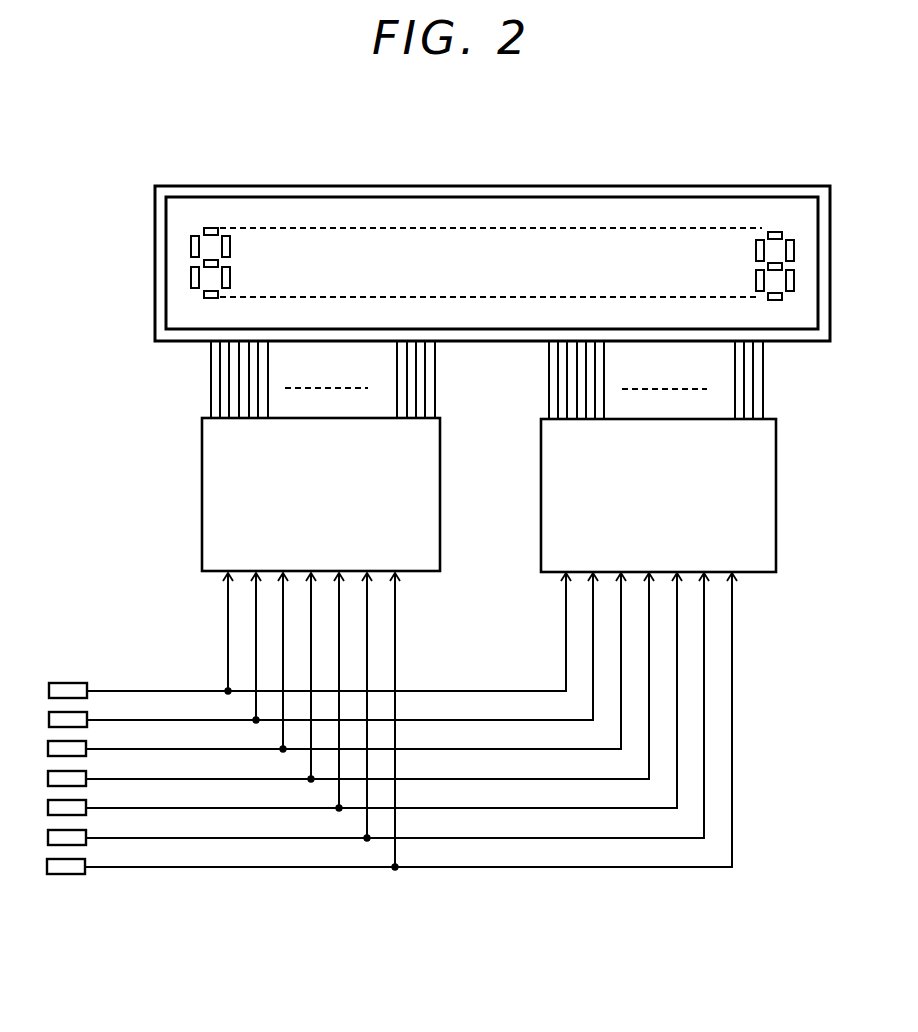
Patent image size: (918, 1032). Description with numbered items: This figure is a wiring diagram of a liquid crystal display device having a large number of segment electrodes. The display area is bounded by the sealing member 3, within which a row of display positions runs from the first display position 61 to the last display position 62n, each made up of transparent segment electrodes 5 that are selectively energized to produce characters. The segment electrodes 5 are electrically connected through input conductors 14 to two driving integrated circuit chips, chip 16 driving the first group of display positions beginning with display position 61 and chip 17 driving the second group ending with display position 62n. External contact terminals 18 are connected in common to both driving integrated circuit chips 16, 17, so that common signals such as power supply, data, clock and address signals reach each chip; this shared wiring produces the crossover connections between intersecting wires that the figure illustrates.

The sealing member 3 is at (158, 230).
The segment electrode 5 is at (190, 274).
The first display position 61 is at (163, 219).
The last display position 62n is at (775, 228).
The input conductor 14 is at (211, 389).
The driving integrated circuit chip 16 is at (220, 500).
The driving integrated circuit chip 17 is at (567, 497).
The external contact terminal 18 is at (68, 690).